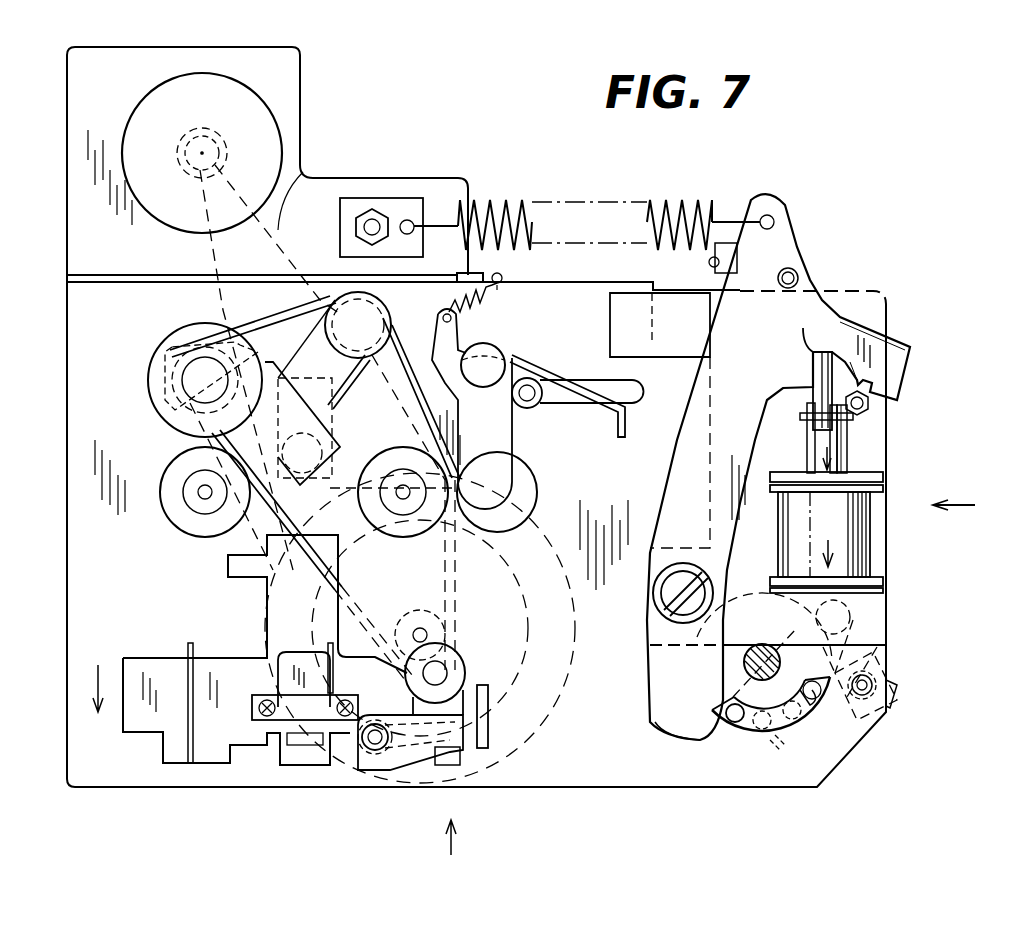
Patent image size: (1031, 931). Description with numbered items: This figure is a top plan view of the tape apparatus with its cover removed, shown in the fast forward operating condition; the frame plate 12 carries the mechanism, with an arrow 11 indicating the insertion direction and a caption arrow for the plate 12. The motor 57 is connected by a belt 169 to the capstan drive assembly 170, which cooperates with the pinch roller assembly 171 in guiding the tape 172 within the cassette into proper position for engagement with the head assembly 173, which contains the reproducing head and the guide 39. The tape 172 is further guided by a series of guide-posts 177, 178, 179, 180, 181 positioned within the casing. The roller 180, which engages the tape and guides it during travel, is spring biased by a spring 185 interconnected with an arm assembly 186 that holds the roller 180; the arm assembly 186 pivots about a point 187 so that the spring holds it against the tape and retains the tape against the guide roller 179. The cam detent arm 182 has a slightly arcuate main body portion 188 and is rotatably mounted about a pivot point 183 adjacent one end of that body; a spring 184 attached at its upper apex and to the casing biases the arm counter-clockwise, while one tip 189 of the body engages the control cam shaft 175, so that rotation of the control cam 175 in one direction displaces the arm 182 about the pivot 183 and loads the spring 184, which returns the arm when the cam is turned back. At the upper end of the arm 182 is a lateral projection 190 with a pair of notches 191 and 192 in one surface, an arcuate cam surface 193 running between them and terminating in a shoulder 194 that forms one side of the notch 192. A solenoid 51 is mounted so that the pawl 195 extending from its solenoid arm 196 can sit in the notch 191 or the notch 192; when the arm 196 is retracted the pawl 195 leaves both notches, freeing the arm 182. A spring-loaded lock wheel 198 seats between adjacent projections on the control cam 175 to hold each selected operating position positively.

The cassette insertion direction arrow 11 is at (980, 505).
The frame plate 12 is at (476, 470).
The guide 39 is at (312, 692).
The solenoid 51 is at (865, 513).
The motor 57 is at (263, 123).
The belt 169 is at (303, 173).
The capstan drive assembly 170 is at (427, 633).
The pinch roller assembly 171 is at (460, 712).
The tape 172 is at (455, 565).
The head assembly 173 is at (225, 742).
The control cam shaft 175 is at (752, 712).
The guide-post 177 is at (165, 352).
The guide-post 178 is at (178, 508).
The guide roller 179 is at (408, 530).
The roller 180 is at (525, 475).
The guide-post 181 is at (368, 318).
The cam detent arm 182 is at (778, 467).
The pivot point 183 is at (673, 590).
The spring 184 is at (676, 205).
The spring 185 is at (476, 305).
The arm assembly 186 is at (522, 378).
The pivot point 187 is at (488, 372).
The main body portion 188 is at (673, 467).
The tip 189 is at (690, 745).
The lateral projection 190 is at (845, 340).
The notch 191 is at (815, 358).
The notch 192 is at (880, 397).
The arcuate cam surface 193 is at (847, 372).
The shoulder 194 is at (865, 381).
The pawl 195 is at (823, 390).
The solenoid arm 196 is at (835, 450).
The lock wheel 198 is at (848, 616).